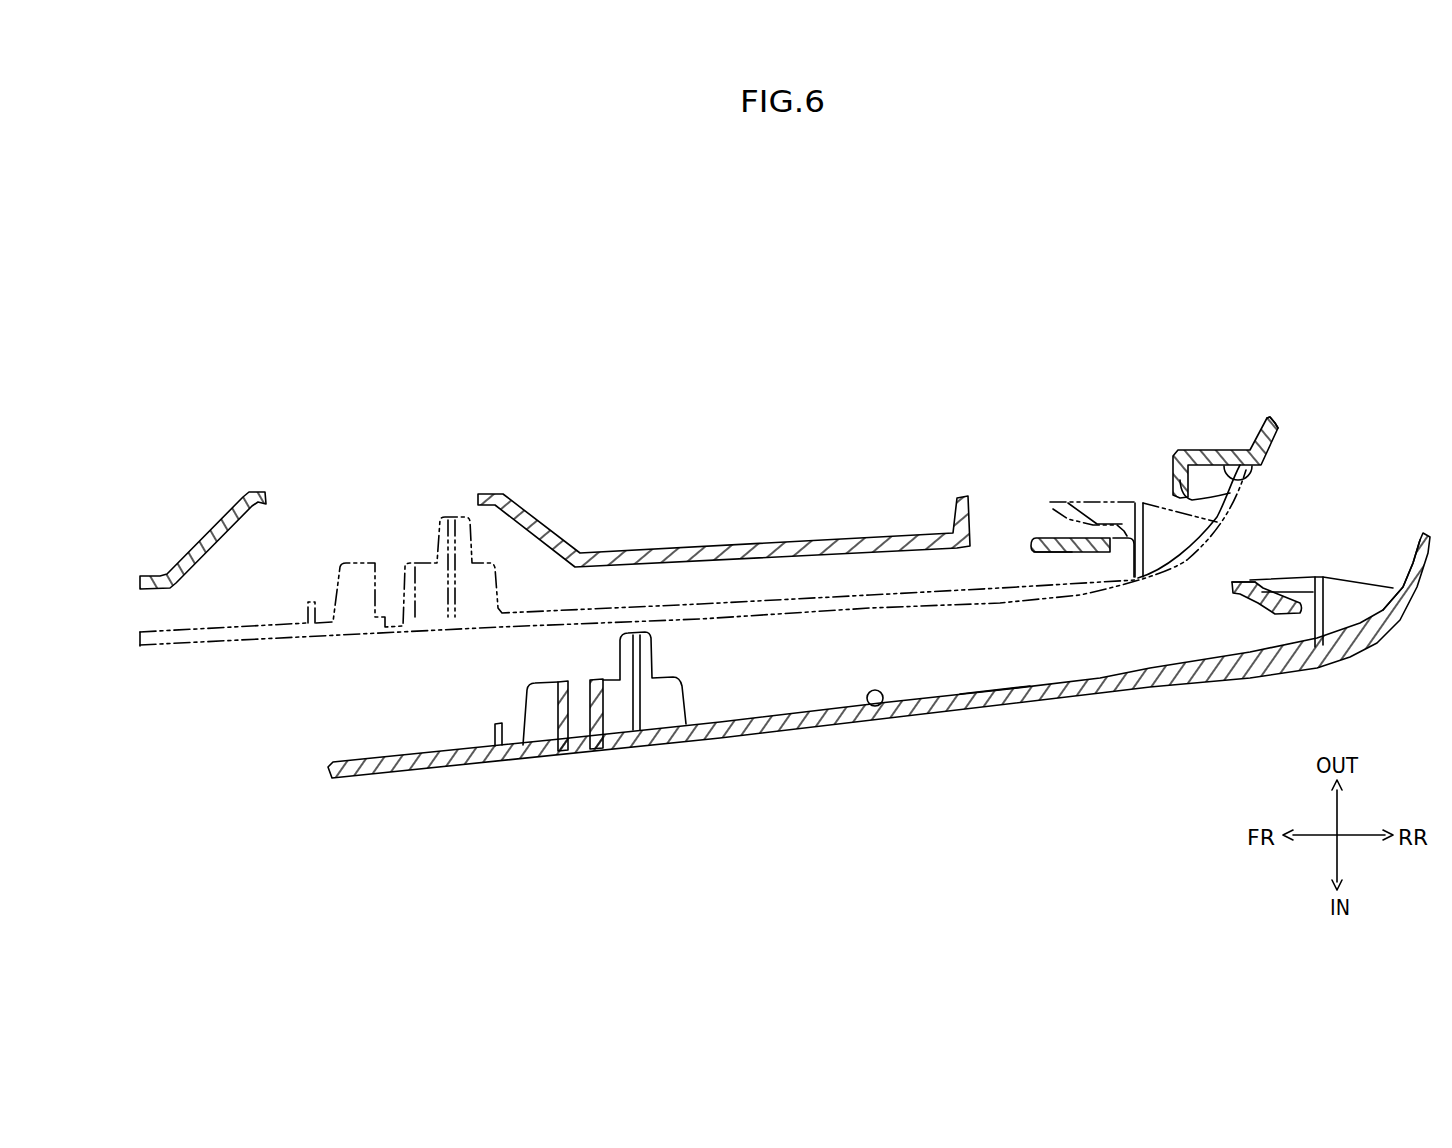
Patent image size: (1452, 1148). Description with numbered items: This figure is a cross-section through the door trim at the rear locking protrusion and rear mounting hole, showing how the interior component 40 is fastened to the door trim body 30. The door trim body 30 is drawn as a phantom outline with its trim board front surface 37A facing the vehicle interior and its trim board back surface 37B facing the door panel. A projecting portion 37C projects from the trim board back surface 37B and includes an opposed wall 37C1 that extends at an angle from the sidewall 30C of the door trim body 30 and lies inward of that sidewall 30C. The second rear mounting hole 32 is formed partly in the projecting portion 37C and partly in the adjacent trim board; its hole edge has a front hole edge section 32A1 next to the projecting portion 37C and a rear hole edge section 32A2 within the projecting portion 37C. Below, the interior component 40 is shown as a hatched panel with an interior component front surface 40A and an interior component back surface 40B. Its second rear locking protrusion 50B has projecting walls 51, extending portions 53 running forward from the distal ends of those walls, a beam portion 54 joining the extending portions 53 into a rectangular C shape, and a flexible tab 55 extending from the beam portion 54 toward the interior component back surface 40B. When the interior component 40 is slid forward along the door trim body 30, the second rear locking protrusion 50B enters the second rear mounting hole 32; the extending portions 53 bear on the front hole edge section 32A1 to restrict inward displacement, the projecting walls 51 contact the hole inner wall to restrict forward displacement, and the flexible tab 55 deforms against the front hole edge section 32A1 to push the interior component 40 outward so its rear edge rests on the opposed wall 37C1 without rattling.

The door trim body 30 is at (673, 428).
The sidewall 30C is at (1276, 432).
The second rear mounting hole 32 is at (1110, 540).
The front hole edge section 32A1 is at (1098, 555).
The rear hole edge section 32A2 is at (1230, 493).
The trim board front surface 37A is at (1048, 555).
The trim board back surface 37B is at (1042, 537).
The projecting portion 37C is at (1218, 430).
The opposed wall 37C1 is at (1248, 478).
The interior component 40 is at (273, 667).
The interior component front surface 40A is at (996, 706).
The interior component back surface 40B is at (882, 706).
The second rear locking protrusion 50B is at (1057, 480).
The projecting walls 51 is at (1360, 612).
The extending portions 53 is at (1293, 573).
The beam portion 54 is at (1245, 578).
The flexible tab 55 is at (1268, 597).